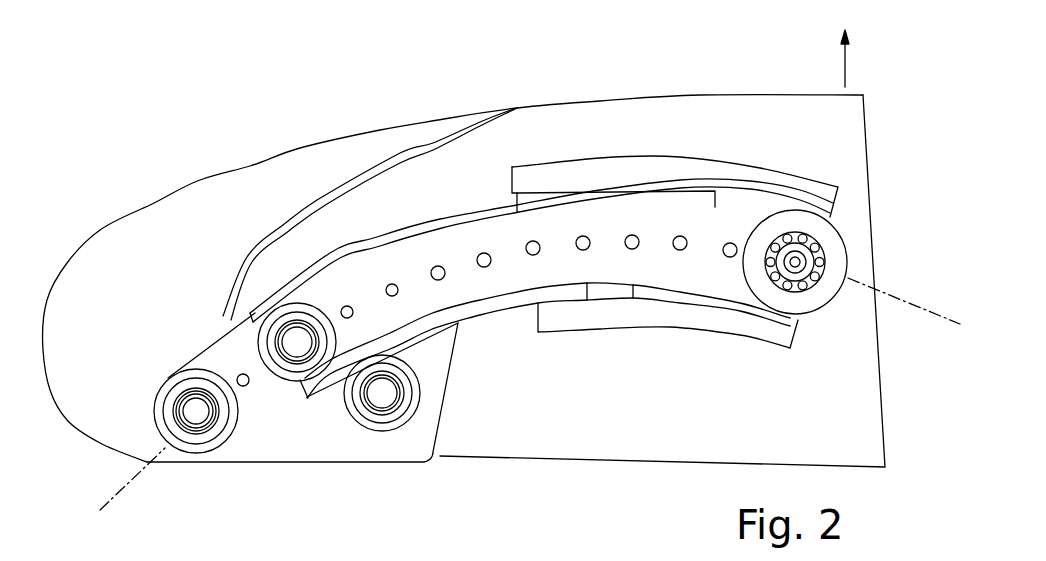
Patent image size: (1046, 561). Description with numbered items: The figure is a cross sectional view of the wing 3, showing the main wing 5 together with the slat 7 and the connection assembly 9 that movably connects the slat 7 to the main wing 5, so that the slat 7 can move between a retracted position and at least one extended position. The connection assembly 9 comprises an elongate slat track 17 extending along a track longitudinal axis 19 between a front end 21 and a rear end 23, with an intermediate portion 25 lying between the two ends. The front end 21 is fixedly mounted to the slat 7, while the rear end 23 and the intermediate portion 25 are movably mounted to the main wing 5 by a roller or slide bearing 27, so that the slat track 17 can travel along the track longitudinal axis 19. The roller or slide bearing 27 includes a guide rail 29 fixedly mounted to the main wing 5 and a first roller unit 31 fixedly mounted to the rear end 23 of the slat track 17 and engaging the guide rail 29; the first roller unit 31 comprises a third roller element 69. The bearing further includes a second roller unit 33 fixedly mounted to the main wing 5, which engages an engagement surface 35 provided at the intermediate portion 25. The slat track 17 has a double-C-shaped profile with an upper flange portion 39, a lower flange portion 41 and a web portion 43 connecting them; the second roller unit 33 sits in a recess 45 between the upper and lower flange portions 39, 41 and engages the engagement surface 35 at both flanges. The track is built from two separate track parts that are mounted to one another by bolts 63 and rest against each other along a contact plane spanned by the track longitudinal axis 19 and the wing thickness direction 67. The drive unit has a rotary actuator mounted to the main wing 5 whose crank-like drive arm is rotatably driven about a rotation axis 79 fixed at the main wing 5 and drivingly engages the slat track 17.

The wing 3 is at (103, 163).
The main wing 5 is at (734, 403).
The slat 7 is at (104, 326).
The connection assembly 9 is at (540, 136).
The slat track 17 is at (460, 233).
The track longitudinal axis 19 is at (943, 318).
The front end 21 is at (300, 433).
The rear end 23 is at (765, 208).
The intermediate portion 25 is at (507, 283).
The roller or slide bearing 27 is at (586, 241).
The guide rail 29 is at (720, 170).
The first roller unit 31 is at (852, 302).
The second roller unit 33 is at (298, 305).
The engagement surface 35 is at (500, 212).
The upper flange portion 39 is at (397, 232).
The lower flange portion 41 is at (573, 292).
The web portion 43 is at (552, 270).
The recess 45 is at (603, 260).
The bolts 63 is at (347, 305).
The wing thickness direction 67 is at (848, 63).
The third roller element 69 is at (837, 250).
The rotation axis 79 is at (805, 340).